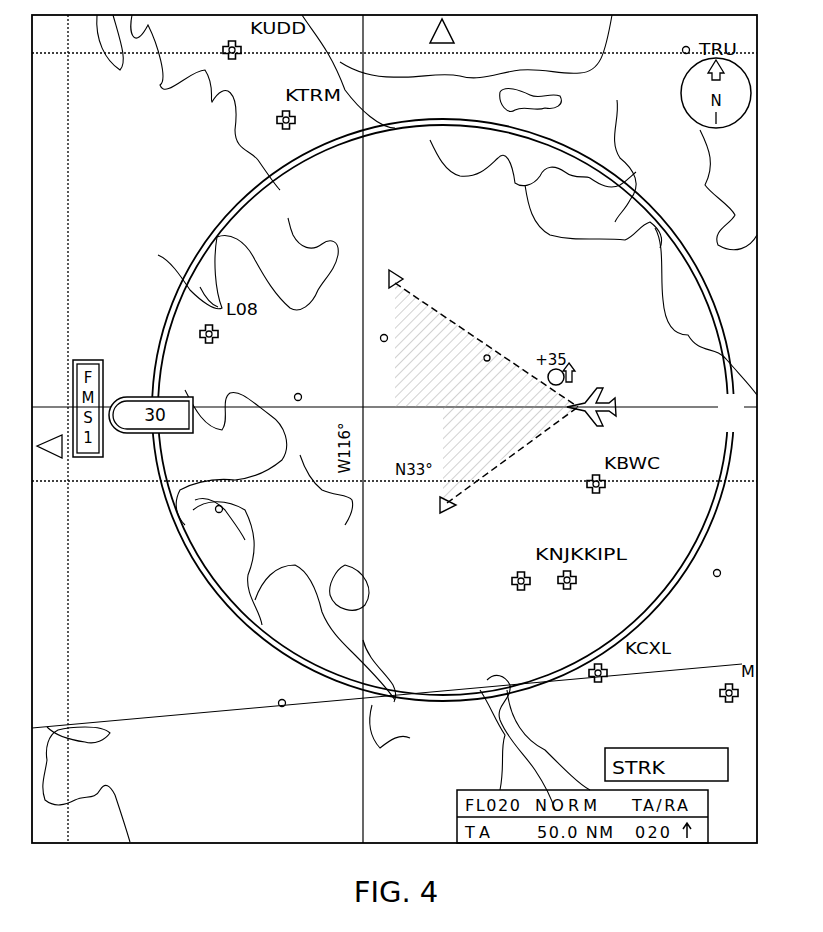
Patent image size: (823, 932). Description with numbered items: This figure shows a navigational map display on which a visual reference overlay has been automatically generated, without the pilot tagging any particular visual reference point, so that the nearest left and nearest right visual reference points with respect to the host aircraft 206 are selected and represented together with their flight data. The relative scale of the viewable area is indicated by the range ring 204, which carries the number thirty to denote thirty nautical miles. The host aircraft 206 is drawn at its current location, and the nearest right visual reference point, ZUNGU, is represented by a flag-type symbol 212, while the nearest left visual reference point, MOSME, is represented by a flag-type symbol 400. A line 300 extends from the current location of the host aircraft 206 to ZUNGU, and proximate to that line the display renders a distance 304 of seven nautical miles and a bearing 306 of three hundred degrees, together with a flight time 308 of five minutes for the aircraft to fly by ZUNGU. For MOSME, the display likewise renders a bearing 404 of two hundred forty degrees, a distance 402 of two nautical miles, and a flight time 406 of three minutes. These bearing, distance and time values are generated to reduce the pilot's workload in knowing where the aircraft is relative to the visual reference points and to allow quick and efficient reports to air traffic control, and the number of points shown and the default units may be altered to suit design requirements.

The range ring 204 is at (222, 222).
The host aircraft 206 is at (617, 405).
The symbol for VRP ZUNGU 212 is at (392, 270).
The line 300 is at (516, 357).
The distance 304 is at (490, 332).
The bearing 306 is at (463, 330).
The flight time 308 is at (392, 393).
The symbol for VRP MOSME 400 is at (438, 511).
The distance 402 is at (562, 428).
The bearing 404 is at (540, 478).
The flight time 406 is at (442, 426).